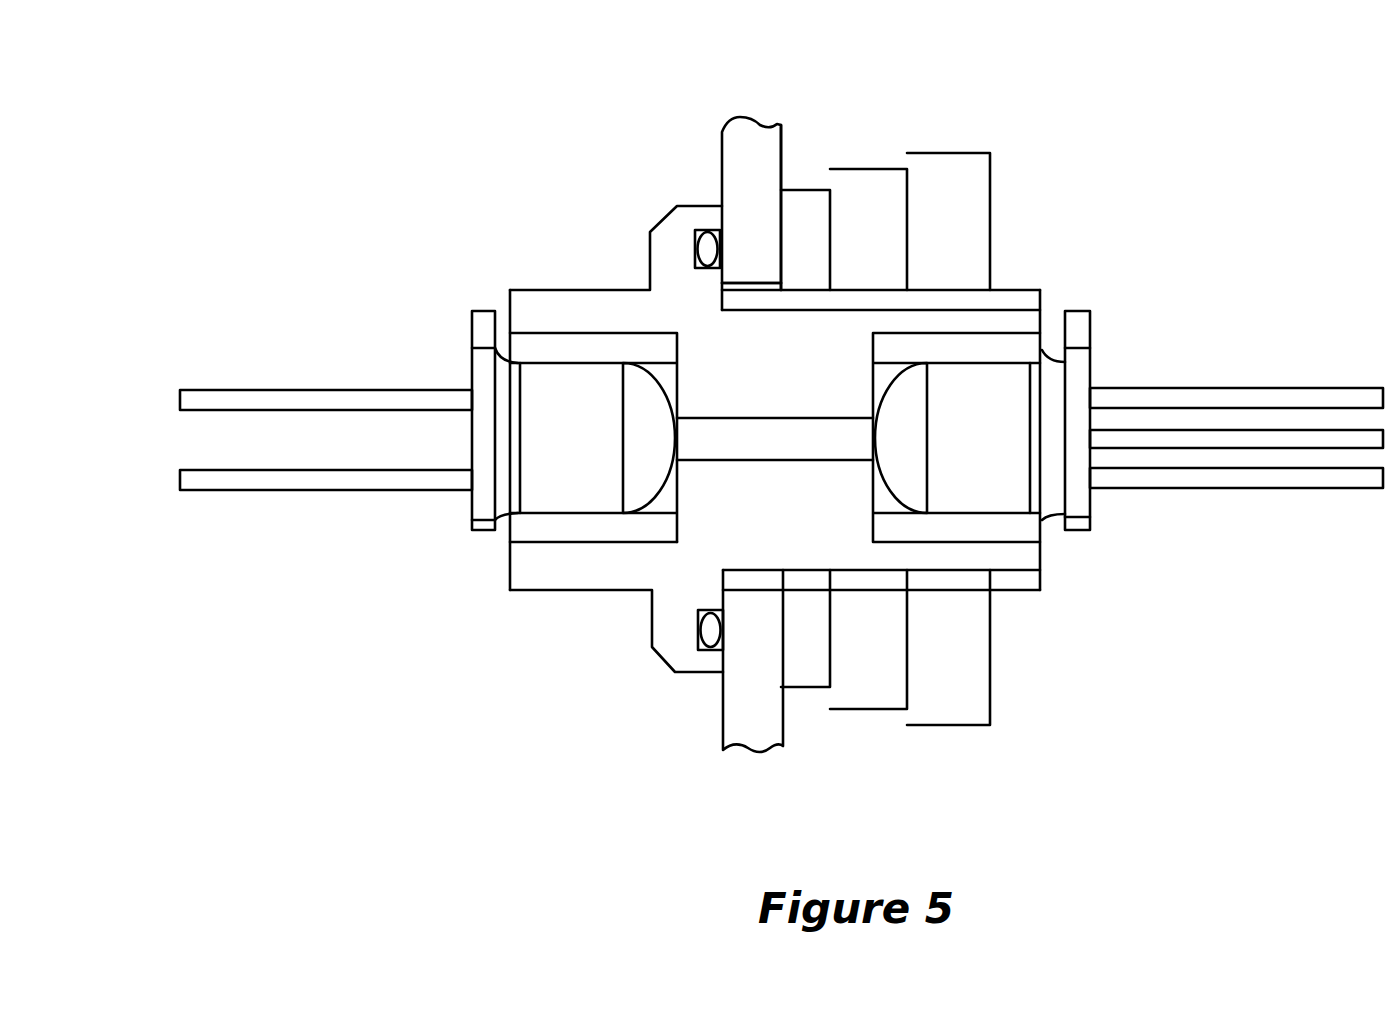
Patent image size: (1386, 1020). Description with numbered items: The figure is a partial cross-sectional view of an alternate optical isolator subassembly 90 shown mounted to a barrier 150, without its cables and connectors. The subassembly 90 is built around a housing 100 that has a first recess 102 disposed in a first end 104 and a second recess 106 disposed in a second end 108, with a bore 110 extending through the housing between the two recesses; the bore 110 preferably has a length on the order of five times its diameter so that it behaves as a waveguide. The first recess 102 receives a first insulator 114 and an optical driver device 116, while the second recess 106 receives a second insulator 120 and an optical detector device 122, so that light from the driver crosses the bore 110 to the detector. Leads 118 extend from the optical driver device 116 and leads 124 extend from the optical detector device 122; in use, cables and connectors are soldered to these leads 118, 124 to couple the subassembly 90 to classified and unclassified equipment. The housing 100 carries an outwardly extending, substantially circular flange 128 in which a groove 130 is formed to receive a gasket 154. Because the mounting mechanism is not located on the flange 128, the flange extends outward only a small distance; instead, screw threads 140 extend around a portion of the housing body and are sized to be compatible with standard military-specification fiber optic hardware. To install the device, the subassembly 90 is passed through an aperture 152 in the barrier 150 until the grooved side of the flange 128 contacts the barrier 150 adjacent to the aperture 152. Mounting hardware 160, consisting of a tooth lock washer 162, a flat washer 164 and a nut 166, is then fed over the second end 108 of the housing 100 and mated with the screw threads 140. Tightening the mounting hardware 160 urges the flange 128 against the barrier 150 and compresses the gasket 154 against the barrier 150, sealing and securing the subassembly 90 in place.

The optical isolator subassembly 90 is at (552, 173).
The housing 100 is at (657, 212).
The first recess 102 is at (578, 543).
The first end 104 is at (528, 282).
The second recess 106 is at (1005, 543).
The second end 108 is at (1043, 272).
The bore 110 is at (738, 447).
The first insulator 114 is at (540, 533).
The optical driver device 116 is at (537, 487).
The leads 118 is at (342, 400).
The second insulator 120 is at (1028, 530).
The optical detector device 122 is at (1022, 482).
The leads 124 is at (1208, 398).
The flange 128 is at (725, 218).
The groove 130 is at (703, 652).
The screw threads 140 is at (998, 298).
The barrier 150 is at (782, 142).
The aperture 152 is at (743, 282).
The gasket 154 is at (712, 637).
The mounting hardware 160 is at (997, 803).
The tooth lock washer 162 is at (807, 687).
The flat washer 164 is at (870, 709).
The nut 166 is at (945, 727).